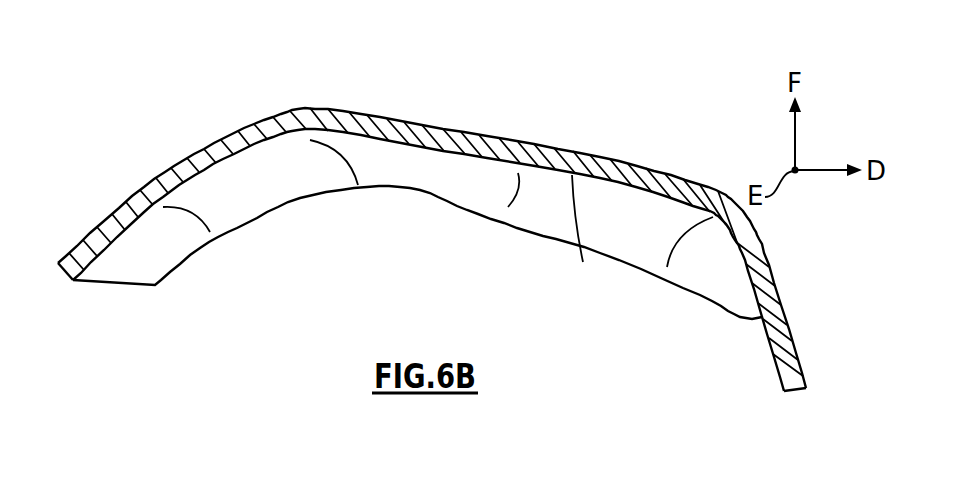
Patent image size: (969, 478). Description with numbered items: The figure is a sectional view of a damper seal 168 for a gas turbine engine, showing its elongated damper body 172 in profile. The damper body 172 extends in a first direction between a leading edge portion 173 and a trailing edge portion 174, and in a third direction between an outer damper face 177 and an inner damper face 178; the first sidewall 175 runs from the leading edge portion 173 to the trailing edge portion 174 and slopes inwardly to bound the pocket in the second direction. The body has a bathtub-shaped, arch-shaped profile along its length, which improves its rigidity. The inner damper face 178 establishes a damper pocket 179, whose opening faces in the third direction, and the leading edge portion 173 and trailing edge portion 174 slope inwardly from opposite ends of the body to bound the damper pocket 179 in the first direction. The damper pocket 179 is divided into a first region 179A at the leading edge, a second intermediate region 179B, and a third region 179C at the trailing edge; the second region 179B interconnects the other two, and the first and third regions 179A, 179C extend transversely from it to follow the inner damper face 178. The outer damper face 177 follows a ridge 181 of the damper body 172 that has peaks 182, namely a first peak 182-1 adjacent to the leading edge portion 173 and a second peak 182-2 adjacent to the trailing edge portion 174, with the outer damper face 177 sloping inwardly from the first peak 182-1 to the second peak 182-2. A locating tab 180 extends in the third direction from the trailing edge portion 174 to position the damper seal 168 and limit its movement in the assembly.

The damper seal 168 is at (143, 156).
The damper body 172 is at (505, 148).
The leading edge portion 173 is at (87, 247).
The trailing edge portion 174 is at (762, 262).
The first sidewall 175 is at (247, 223).
The outer damper face 177 is at (583, 150).
The inner damper face 178 is at (582, 237).
The damper pocket 179 is at (418, 170).
The first region 179A is at (160, 240).
The second region 179B is at (468, 180).
The third region 179C is at (708, 267).
The locating tab 180 is at (787, 353).
The ridge 181 is at (428, 123).
The peak 182 is at (283, 112).
The first peak 182-1 is at (256, 189).
The second peak 182-2 is at (717, 203).